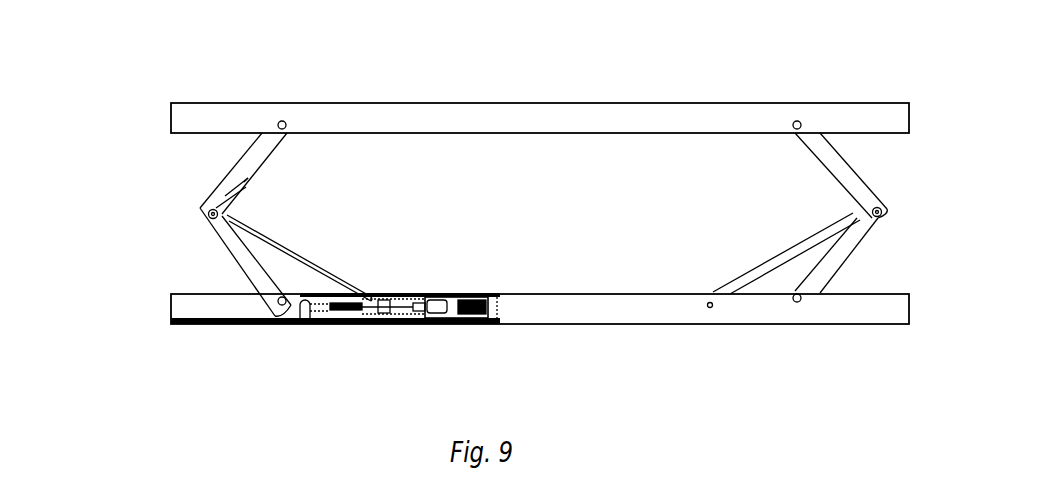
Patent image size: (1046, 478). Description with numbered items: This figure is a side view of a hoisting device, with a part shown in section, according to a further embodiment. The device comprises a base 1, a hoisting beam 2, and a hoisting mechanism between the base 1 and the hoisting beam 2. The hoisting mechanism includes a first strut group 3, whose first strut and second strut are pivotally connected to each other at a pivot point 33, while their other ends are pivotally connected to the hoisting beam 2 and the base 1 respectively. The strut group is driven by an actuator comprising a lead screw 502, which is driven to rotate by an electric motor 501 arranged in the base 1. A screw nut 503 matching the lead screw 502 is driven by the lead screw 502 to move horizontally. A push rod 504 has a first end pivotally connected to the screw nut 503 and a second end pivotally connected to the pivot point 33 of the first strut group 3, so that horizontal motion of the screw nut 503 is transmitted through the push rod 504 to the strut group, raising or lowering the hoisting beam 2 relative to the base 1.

The base 1 is at (647, 308).
The hoisting beam 2 is at (597, 118).
The first strut group 3 is at (223, 249).
The pivot point 33 is at (206, 211).
The electric motor 501 is at (458, 296).
The lead screw 502 is at (360, 309).
The screw nut 503 is at (386, 297).
The push rod 504 is at (279, 244).